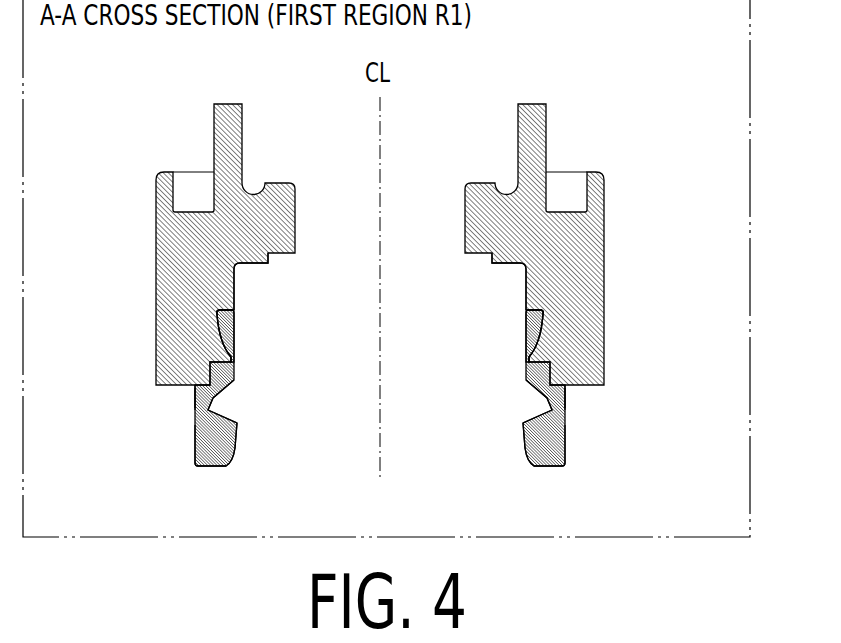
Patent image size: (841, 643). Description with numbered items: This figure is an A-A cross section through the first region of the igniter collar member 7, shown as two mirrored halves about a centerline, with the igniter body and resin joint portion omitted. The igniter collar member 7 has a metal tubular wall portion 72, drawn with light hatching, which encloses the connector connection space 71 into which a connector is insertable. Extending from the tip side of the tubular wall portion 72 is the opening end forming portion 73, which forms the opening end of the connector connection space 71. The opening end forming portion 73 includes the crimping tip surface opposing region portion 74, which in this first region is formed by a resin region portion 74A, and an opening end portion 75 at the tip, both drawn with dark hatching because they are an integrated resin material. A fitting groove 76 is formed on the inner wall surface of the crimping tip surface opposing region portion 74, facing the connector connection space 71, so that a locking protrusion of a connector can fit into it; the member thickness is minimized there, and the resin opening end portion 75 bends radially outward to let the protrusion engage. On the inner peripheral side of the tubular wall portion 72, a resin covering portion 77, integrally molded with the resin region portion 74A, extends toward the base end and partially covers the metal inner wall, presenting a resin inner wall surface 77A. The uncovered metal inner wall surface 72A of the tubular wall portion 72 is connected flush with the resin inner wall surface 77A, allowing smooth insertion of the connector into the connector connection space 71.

The igniter collar member 7 is at (590, 86).
The connector connection space 71 is at (430, 413).
The tubular wall portion 72 is at (586, 265).
The metal inner wall surface 72A is at (236, 293).
The opening end forming portion 73 is at (693, 397).
The crimping tip surface opposing region portion 74 is at (197, 404).
The resin region portion 74A is at (374, 405).
The opening end portion 75 is at (195, 443).
The fitting groove 76 is at (214, 398).
The resin covering portion 77 is at (234, 338).
The resin inner wall surface 77A is at (234, 318).